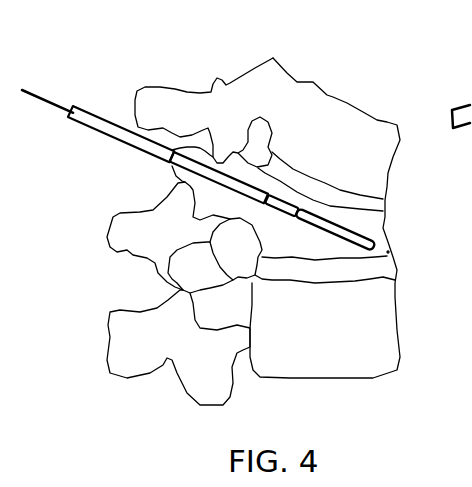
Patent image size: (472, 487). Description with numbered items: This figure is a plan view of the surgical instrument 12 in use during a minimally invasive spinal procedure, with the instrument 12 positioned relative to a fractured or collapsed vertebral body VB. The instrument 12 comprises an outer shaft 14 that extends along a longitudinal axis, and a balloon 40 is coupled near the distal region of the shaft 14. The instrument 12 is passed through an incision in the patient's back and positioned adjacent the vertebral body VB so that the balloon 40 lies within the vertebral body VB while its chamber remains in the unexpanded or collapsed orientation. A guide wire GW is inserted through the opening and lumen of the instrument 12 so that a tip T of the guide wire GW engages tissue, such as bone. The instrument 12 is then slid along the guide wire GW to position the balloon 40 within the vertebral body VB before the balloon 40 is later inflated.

The surgical instrument 12 is at (187, 176).
The outer shaft 14 is at (100, 118).
The balloon 40 is at (322, 222).
The guide wire GW is at (45, 97).
The vertebral body VB is at (373, 230).
The tip T is at (387, 258).